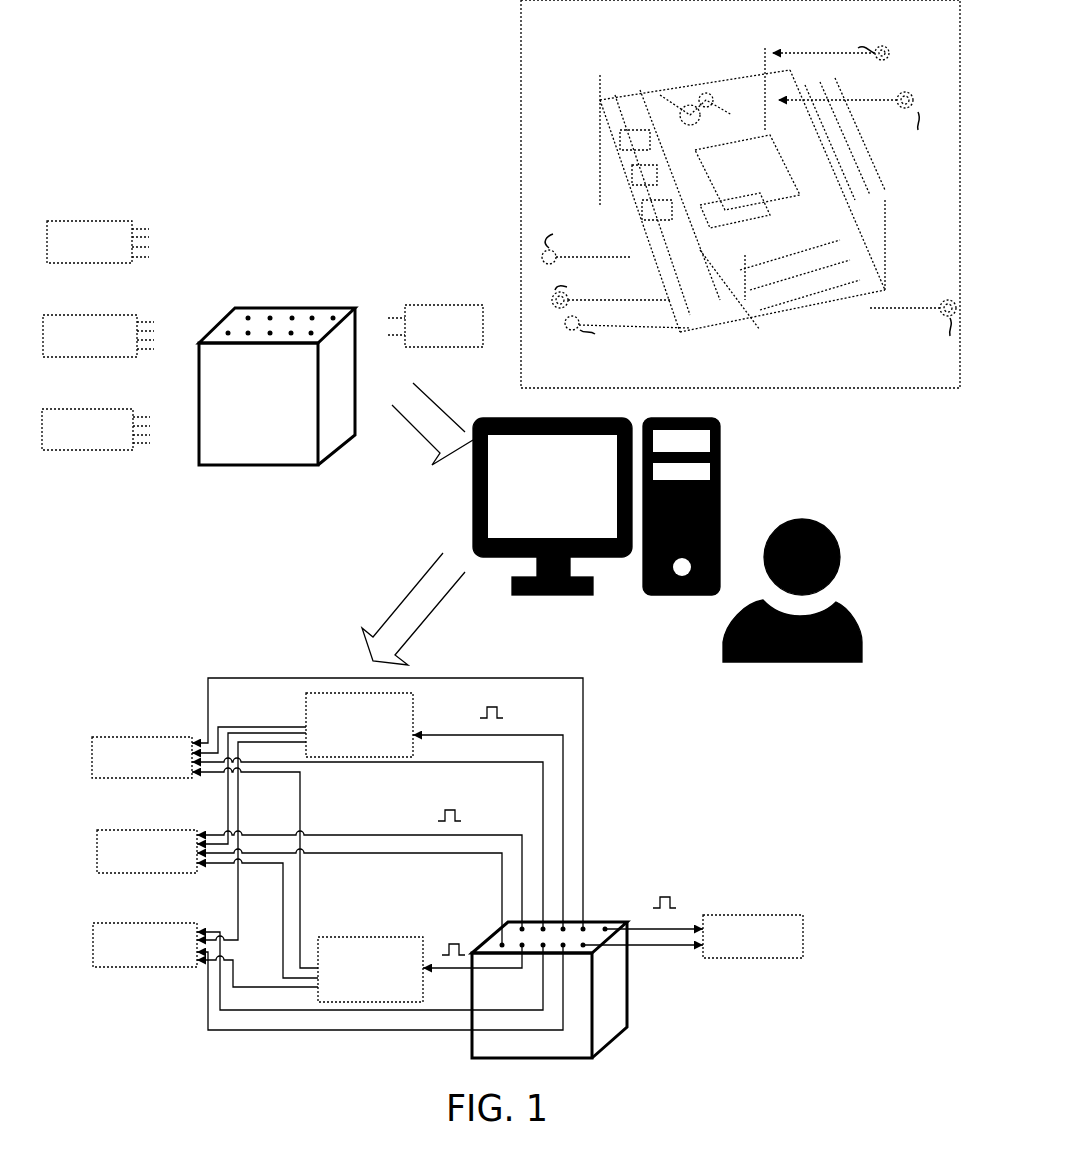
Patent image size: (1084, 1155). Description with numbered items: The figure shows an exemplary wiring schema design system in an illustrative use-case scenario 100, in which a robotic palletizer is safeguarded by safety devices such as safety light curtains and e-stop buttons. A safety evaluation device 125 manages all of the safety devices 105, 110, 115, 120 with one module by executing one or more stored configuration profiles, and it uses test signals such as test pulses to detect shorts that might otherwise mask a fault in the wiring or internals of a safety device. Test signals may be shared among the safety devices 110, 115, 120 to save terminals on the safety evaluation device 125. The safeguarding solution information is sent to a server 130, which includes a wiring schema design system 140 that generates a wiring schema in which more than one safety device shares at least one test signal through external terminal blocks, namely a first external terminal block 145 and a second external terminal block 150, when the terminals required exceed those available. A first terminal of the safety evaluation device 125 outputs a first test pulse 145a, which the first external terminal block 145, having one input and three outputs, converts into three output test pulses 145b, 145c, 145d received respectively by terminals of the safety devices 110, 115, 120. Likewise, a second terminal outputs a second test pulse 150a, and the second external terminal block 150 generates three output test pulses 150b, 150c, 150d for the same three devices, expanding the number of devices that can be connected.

The depicted scenario 100 is at (508, 67).
The safety device 105 is at (416, 303).
The safety device 110 is at (83, 220).
The safety device 115 is at (82, 315).
The safety device 120 is at (82, 409).
The safety evaluation device 125 is at (336, 305).
The server 130 is at (683, 598).
The wiring schema design system 140 is at (552, 506).
The first external terminal block 145 is at (415, 717).
The first test pulse 145a is at (518, 733).
The output test pulse 145b is at (243, 716).
The output test pulse 145c is at (226, 783).
The output test pulse 145d is at (239, 807).
The second external terminal block 150 is at (352, 936).
The second test pulse 150a is at (455, 972).
The output test pulse 150b is at (302, 905).
The output test pulse 150c is at (283, 918).
The output test pulse 150d is at (248, 988).